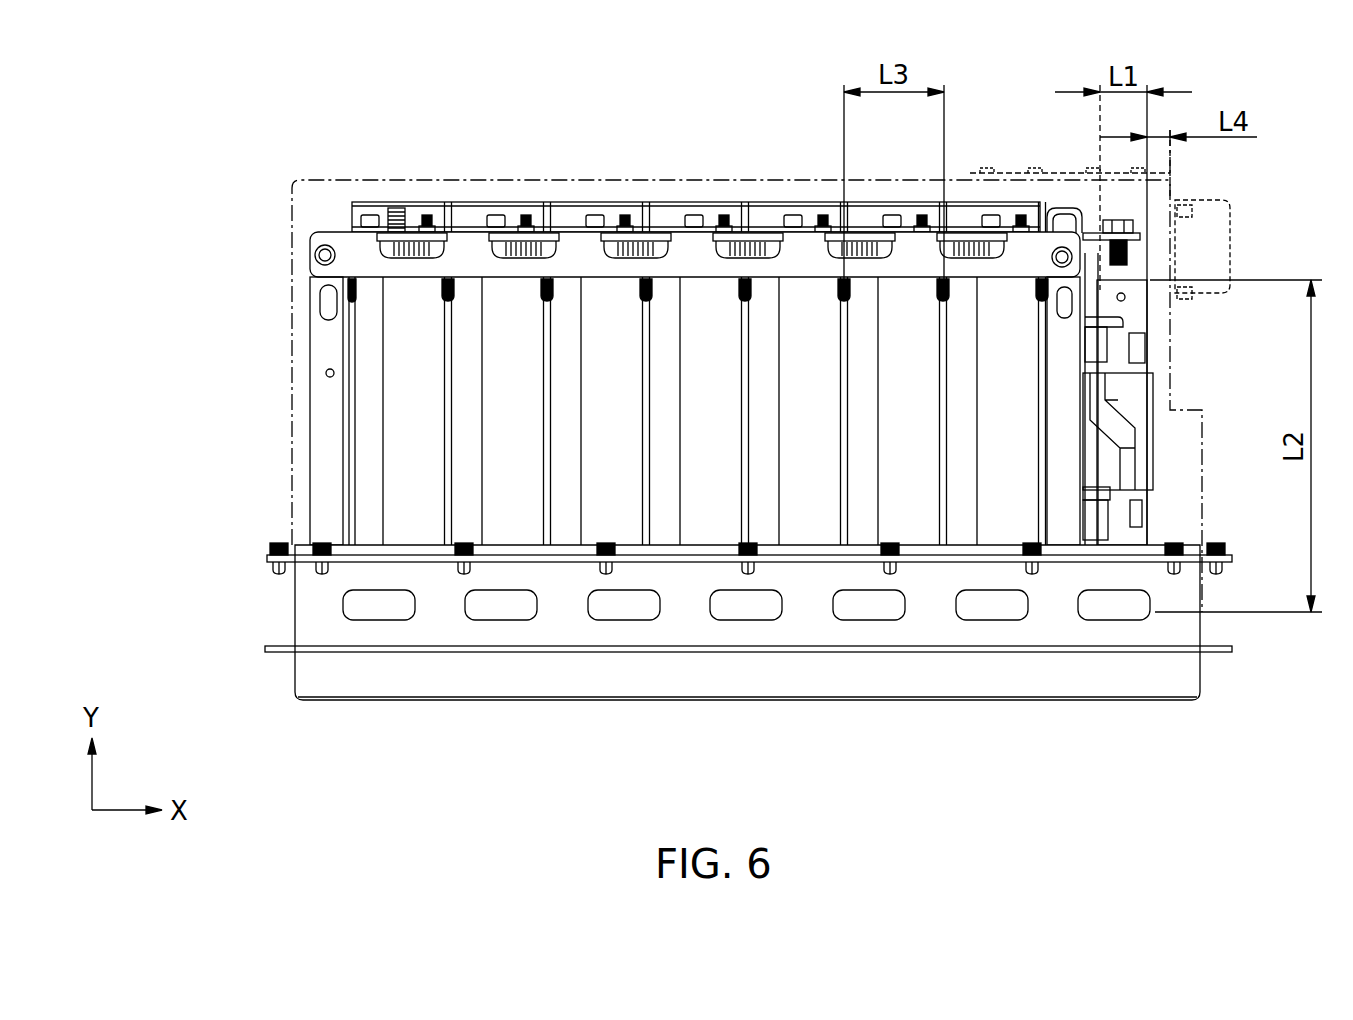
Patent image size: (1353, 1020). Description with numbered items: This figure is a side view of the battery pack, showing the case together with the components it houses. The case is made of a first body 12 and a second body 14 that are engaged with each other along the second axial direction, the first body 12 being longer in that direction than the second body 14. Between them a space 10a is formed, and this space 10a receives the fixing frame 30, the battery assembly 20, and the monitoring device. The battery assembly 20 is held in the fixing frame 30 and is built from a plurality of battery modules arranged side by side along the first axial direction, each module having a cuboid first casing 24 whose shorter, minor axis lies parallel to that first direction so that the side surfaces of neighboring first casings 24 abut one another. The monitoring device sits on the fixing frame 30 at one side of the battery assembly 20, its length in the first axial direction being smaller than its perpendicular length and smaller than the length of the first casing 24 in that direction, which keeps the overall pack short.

The space 10a is at (445, 195).
The first body 12 is at (535, 178).
The second body 14 is at (478, 672).
The battery assembly 20 is at (380, 372).
The first casing 24 is at (907, 505).
The fixing frame 30 is at (313, 243).